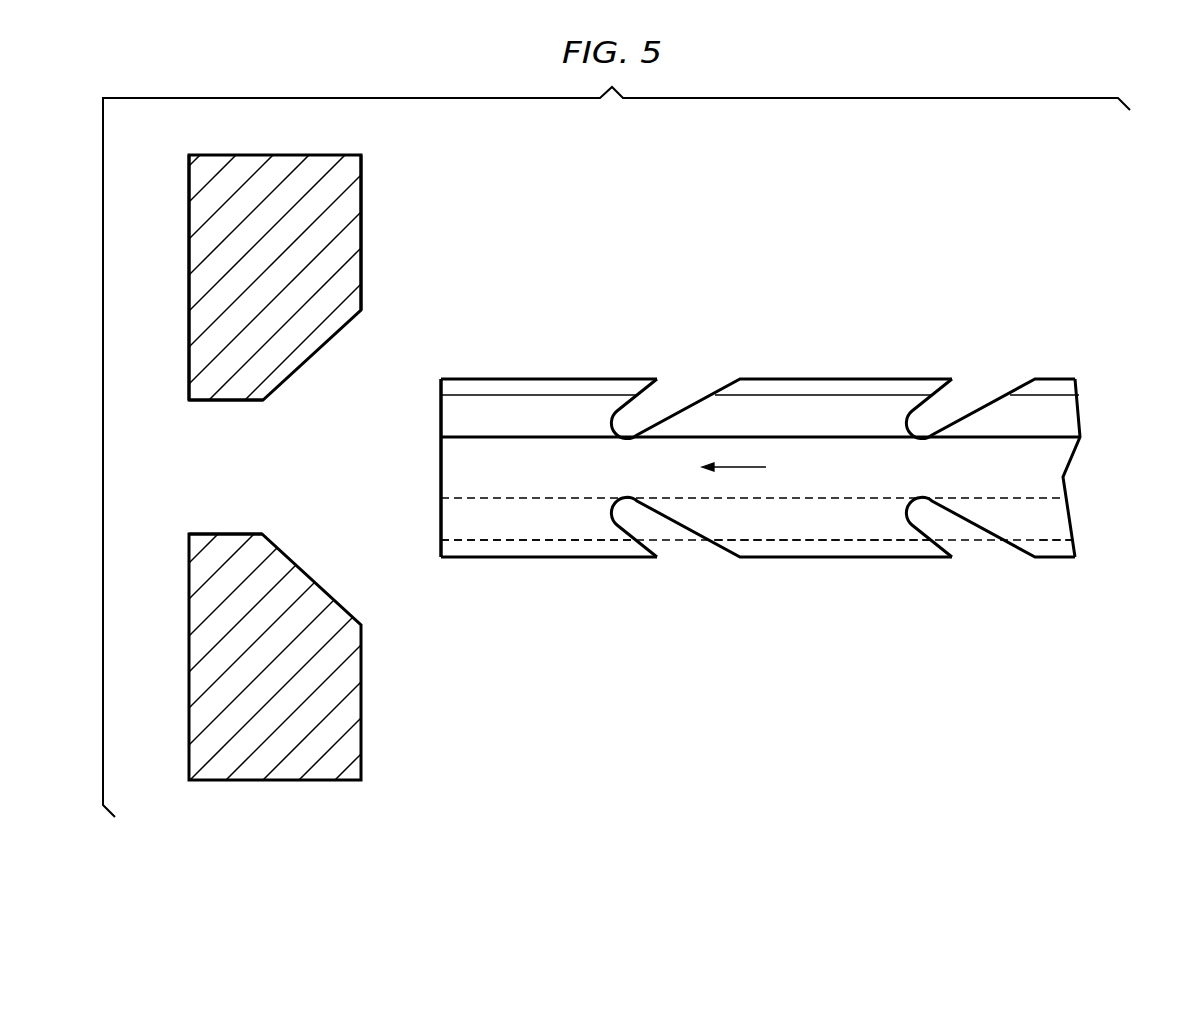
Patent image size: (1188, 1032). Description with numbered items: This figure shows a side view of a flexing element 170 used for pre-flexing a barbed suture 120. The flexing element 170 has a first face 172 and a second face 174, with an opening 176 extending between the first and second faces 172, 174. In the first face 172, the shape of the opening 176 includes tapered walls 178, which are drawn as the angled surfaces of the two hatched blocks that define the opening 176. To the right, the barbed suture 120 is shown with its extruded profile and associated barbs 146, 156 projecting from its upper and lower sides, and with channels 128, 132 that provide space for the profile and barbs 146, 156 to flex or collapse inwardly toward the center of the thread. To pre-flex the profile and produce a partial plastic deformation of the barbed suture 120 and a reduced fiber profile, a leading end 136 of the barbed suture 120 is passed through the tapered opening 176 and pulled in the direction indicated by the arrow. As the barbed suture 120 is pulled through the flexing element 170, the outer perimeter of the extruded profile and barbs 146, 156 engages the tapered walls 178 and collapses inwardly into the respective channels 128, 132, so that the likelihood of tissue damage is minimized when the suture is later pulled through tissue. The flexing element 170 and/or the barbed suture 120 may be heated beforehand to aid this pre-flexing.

The barbed suture 120 is at (738, 449).
The channel 128 is at (1063, 416).
The channel 132 is at (1063, 518).
The leading end 136 is at (434, 370).
The barbs 146 is at (583, 387).
The barbs 156 is at (500, 552).
The flexing element 170 is at (250, 195).
The first face 172 is at (362, 223).
The second face 174 is at (189, 281).
The opening 176 is at (168, 469).
The tapered walls 178 is at (308, 568).